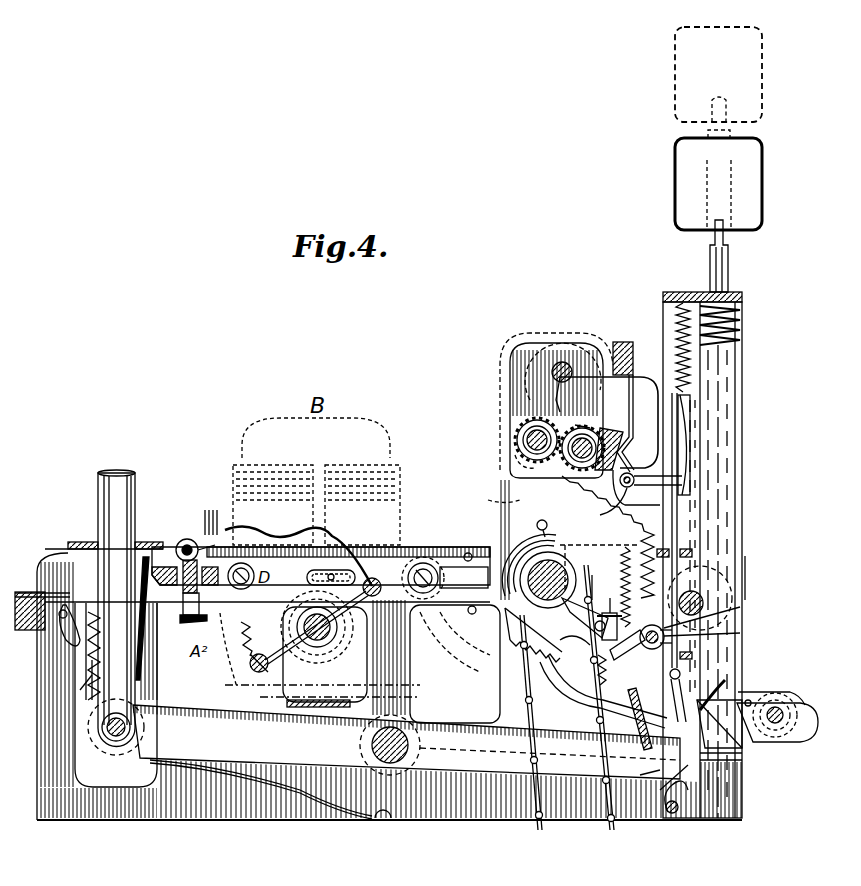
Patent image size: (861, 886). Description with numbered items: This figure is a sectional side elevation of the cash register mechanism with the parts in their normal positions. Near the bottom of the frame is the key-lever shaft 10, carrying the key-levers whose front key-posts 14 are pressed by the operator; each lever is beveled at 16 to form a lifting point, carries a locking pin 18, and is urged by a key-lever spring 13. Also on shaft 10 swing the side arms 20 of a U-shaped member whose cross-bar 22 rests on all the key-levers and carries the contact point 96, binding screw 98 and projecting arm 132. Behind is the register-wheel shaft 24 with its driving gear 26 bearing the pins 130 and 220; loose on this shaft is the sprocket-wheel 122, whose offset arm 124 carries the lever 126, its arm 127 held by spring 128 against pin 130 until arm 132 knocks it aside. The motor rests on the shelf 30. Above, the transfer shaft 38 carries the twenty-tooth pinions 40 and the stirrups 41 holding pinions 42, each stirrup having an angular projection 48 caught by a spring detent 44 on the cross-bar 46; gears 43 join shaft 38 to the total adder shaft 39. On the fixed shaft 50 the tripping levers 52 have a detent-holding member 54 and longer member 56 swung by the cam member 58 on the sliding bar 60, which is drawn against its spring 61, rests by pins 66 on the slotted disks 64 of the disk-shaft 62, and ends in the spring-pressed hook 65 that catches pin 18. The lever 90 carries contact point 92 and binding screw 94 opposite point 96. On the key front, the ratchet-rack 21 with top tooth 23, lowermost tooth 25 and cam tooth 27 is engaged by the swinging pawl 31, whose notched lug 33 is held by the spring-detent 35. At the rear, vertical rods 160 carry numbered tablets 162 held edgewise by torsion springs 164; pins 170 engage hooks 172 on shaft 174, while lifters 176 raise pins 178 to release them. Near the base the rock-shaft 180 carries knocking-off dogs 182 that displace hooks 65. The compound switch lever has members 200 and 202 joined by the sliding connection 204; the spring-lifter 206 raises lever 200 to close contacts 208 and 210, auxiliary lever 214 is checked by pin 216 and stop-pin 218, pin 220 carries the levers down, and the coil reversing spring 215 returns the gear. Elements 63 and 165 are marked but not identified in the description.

The key-lever shaft 10 is at (372, 745).
The key-lever spring 13 is at (303, 792).
The key-posts 14 is at (98, 493).
The beveled extremity 16 is at (742, 760).
The locking up pin 18 is at (665, 784).
The side arms 20 is at (455, 664).
The ratchet-rack 21 is at (103, 656).
The cross-bar 22 is at (567, 697).
The top tooth 23 is at (102, 651).
The register-wheel shaft 24 is at (493, 631).
The lowermost tooth 25 is at (105, 680).
The driving gear 26 is at (529, 654).
The cam tooth 27 is at (82, 689).
The shelf 30 is at (320, 700).
The swinging pawl 31 is at (65, 632).
The notched lug 33 is at (38, 592).
The spring-detent 35 is at (58, 555).
The transfer shaft 38 is at (527, 440).
The total adder shaft 39 is at (565, 365).
The twenty-tooth pinion 40 is at (520, 460).
The stirrup 41 is at (589, 415).
The twenty-tooth pinion 42 is at (592, 438).
The gears 43 is at (548, 342).
The spring detent 44 is at (608, 441).
The cross-bar 46 is at (622, 345).
The angular projection 48 is at (628, 448).
The fixed shaft 50 is at (608, 537).
The tripping lever 52 is at (620, 482).
The detent-holding member 54 is at (630, 472).
The longer member 56 is at (660, 478).
The pivoted cam member 58 is at (694, 445).
The vertically sliding bar 60 is at (692, 622).
The spring 61 is at (680, 355).
The disk-shaft 62 is at (704, 603).
The link 63 is at (745, 556).
The slotted disk 64 is at (742, 578).
The spring-pressed hook 65 is at (672, 690).
The supporting pins 66 is at (683, 562).
The forwardly extending lever 90 is at (632, 642).
The contact point 92 is at (613, 670).
The binding screw 94 is at (610, 615).
The contact-point 96 is at (635, 695).
The binding screw 98 is at (642, 778).
The sprocket-wheel 122 is at (555, 570).
The offset arm 124 is at (570, 618).
The lever 126 is at (571, 643).
The arm 127 is at (600, 578).
The spring 128 is at (609, 586).
The pin 130 is at (588, 548).
The arm 132 is at (603, 691).
The vertical rods 160 is at (735, 462).
The numbered tablets 162 is at (676, 163).
The torsion springs 164 is at (742, 335).
The lever 165 is at (703, 695).
The pins 170 is at (752, 735).
The hooks 172 is at (740, 693).
The shaft 174 is at (778, 710).
The lifters 176 is at (805, 732).
The pins 178 is at (750, 702).
The rock-shaft 180 is at (672, 815).
The knocking-off dogs 182 is at (680, 807).
The switch lever member 200 is at (255, 560).
The switch lever member 202 is at (423, 562).
The sliding connection 204 is at (340, 575).
The spring-lifter 206 is at (142, 602).
The contact point 208 is at (183, 548).
The contact point 210 is at (188, 540).
The auxiliary lever 214 is at (474, 553).
The coil reversing spring 215 is at (520, 505).
The pin 216 is at (468, 553).
The stop-pin 218 is at (455, 642).
The pin 220 is at (522, 612).